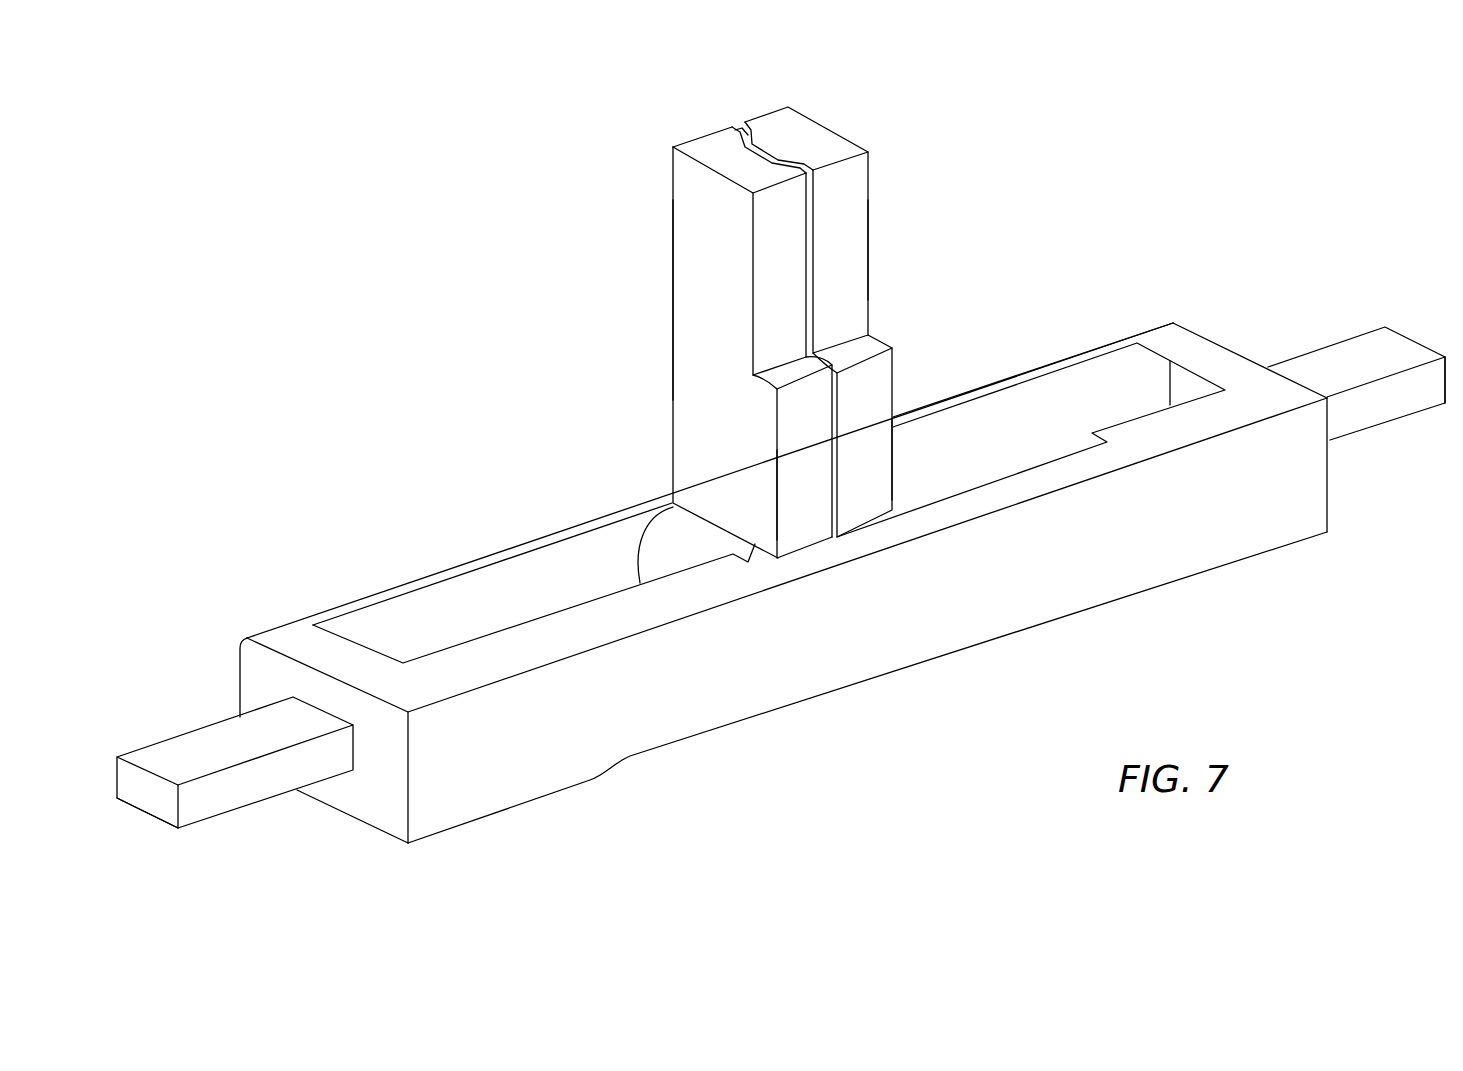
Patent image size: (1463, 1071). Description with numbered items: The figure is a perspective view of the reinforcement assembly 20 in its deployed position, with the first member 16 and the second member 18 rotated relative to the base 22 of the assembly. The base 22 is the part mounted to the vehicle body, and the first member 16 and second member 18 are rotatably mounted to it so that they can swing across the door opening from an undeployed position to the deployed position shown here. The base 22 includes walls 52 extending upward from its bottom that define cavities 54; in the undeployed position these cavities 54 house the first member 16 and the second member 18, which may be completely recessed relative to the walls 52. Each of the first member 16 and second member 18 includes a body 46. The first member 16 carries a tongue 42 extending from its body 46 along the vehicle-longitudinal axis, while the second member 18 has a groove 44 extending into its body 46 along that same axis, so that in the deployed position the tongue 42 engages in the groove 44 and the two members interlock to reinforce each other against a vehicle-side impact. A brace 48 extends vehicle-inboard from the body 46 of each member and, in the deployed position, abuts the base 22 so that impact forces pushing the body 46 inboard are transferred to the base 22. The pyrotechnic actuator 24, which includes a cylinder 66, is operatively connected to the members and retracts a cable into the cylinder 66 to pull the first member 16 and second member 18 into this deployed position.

The first member 16 is at (813, 130).
The second member 18 is at (687, 172).
The reinforcement assembly 20 is at (774, 465).
The base 22 is at (769, 547).
The pyrotechnic actuator 24 is at (190, 732).
The tongue 42 is at (765, 150).
The groove 44 is at (718, 131).
The body 46 is at (853, 200).
The brace 48 is at (802, 487).
The walls 52 is at (777, 457).
The cavities 54 is at (1097, 385).
The cylinder 66 is at (160, 820).